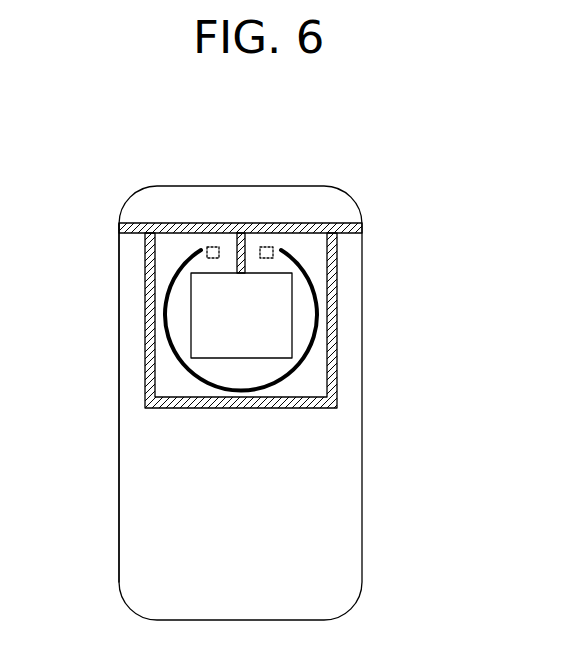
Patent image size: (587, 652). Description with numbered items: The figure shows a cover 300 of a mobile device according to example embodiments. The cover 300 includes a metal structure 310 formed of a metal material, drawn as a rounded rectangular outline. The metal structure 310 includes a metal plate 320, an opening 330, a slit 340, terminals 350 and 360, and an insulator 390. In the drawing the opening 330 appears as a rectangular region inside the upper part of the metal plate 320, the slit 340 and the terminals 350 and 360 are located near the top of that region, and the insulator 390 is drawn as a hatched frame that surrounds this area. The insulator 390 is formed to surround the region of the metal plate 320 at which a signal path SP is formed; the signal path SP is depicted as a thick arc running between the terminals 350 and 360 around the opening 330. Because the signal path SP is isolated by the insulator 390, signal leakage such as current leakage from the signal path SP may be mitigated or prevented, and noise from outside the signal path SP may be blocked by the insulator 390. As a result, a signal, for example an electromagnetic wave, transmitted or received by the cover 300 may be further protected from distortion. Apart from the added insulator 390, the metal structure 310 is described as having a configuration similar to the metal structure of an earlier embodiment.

The cover 300 is at (260, 126).
The metal structure 310 is at (362, 192).
The metal plate 320 is at (119, 337).
The opening 330 is at (262, 313).
The slit 340 is at (267, 246).
The terminal 350 is at (211, 246).
The terminal 360 is at (252, 240).
The insulator 390 is at (337, 372).
The signal path SP is at (237, 388).